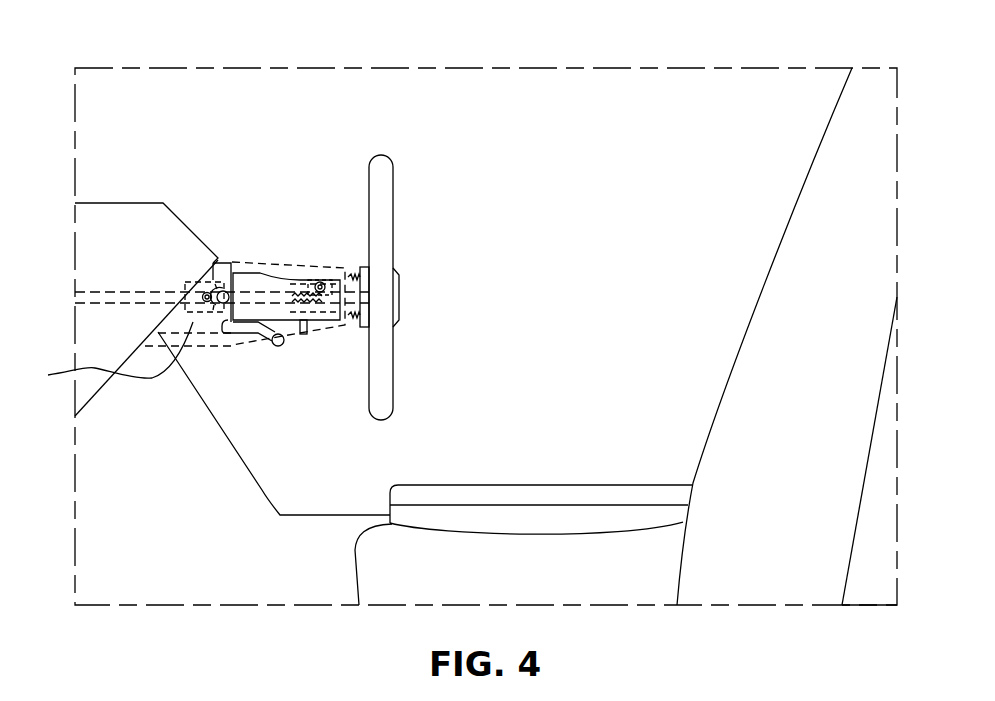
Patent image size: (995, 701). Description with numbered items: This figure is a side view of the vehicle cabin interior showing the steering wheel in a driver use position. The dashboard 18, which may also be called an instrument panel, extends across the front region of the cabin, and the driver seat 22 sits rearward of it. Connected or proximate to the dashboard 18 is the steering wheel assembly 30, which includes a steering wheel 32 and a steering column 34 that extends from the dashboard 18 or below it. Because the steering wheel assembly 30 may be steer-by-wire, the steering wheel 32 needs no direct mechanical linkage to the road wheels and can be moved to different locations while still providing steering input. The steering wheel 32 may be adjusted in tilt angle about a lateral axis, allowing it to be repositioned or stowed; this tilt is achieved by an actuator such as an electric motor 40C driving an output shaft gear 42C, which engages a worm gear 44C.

The dashboard 18 is at (110, 204).
The driver seat 22 is at (778, 252).
The steering wheel assembly 30 is at (396, 158).
The steering wheel 32 is at (370, 188).
The steering column 34 is at (128, 356).
The electric motor 40C is at (199, 282).
The output shaft gear 42C is at (207, 280).
The worm gear 44C is at (213, 343).